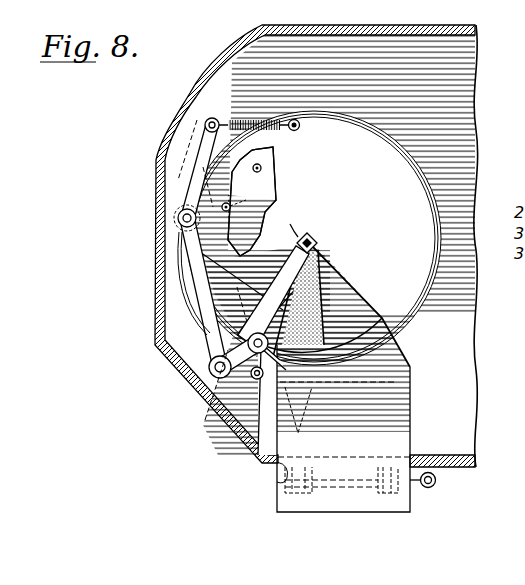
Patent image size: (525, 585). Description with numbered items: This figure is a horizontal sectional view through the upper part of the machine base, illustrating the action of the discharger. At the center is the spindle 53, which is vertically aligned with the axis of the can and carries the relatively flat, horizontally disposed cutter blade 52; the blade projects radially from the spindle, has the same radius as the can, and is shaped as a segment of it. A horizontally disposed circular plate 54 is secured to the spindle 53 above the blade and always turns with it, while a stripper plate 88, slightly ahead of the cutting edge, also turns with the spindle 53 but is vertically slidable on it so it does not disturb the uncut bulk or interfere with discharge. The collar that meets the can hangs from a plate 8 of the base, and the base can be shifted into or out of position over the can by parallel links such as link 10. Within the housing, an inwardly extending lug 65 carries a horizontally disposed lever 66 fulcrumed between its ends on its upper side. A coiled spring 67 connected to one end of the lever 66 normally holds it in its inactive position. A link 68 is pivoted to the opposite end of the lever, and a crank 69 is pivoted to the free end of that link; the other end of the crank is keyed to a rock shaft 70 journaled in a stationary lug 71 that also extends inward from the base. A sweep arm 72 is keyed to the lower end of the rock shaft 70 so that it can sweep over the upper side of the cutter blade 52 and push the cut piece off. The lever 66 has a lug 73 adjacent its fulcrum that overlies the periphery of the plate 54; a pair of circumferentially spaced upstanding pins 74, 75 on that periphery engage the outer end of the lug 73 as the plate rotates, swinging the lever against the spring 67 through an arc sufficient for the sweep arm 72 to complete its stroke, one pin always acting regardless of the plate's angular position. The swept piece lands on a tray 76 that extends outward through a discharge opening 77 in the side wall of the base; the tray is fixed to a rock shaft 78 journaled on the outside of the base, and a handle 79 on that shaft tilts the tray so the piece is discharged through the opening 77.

The plate 8 is at (468, 372).
The parallel link 10 is at (172, 382).
The cutter blade 52 is at (330, 262).
The spindle 53 is at (318, 242).
The circular plate 54 is at (278, 198).
The lug 65 is at (178, 218).
The lever 66 is at (205, 150).
The coiled spring 67 is at (251, 121).
The link 68 is at (240, 362).
The crank 69 is at (272, 352).
The rock shaft 70 is at (252, 366).
The stationary lug 71 is at (226, 385).
The sweep arm 72 is at (267, 297).
The lug 73 is at (246, 201).
The upstanding pin 74 is at (237, 197).
The upstanding pin 75 is at (262, 168).
The tray 76 is at (395, 428).
The discharge opening 77 is at (268, 470).
The rock shaft 78 is at (405, 335).
The handle 79 is at (437, 485).
The stripper plate 88 is at (295, 221).